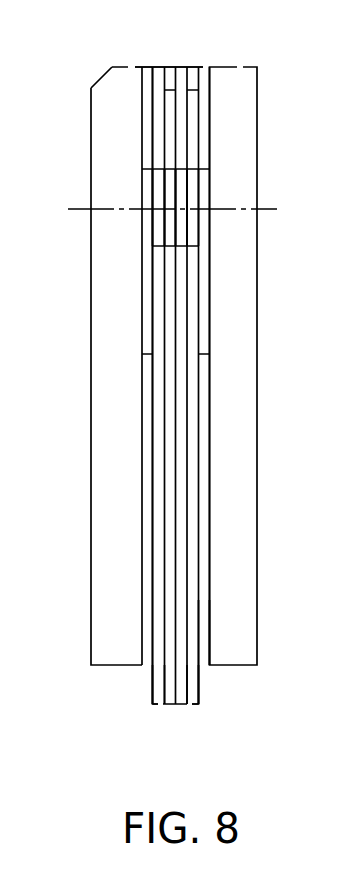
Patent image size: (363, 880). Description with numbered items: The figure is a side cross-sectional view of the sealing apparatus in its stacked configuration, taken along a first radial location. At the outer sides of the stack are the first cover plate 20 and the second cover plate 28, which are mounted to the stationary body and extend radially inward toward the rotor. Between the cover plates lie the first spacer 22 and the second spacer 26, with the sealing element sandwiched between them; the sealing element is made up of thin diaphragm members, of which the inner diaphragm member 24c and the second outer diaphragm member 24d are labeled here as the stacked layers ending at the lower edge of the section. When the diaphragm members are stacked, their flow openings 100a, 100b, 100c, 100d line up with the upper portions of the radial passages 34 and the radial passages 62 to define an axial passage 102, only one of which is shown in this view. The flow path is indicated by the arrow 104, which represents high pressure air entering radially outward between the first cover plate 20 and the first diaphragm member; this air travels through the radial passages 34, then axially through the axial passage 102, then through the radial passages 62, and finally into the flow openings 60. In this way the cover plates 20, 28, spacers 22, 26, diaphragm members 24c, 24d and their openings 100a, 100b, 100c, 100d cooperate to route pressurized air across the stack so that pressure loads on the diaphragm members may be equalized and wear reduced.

The first cover plate 20 is at (243, 68).
The first spacer 22 is at (203, 68).
The inner diaphragm member 24c is at (192, 704).
The second outer diaphragm member 24d is at (158, 704).
The second spacer 26 is at (149, 68).
The second cover plate 28 is at (128, 68).
The radial passages 34 is at (203, 479).
The flow openings 60 is at (145, 293).
The radial passages 62 is at (143, 469).
The flow opening 100a is at (192, 225).
The flow opening 100b is at (182, 188).
The flow opening 100c is at (170, 193).
The flow opening 100d is at (159, 220).
The axial passages 102 is at (157, 185).
The arrow representing high pressure air 104 is at (209, 674).